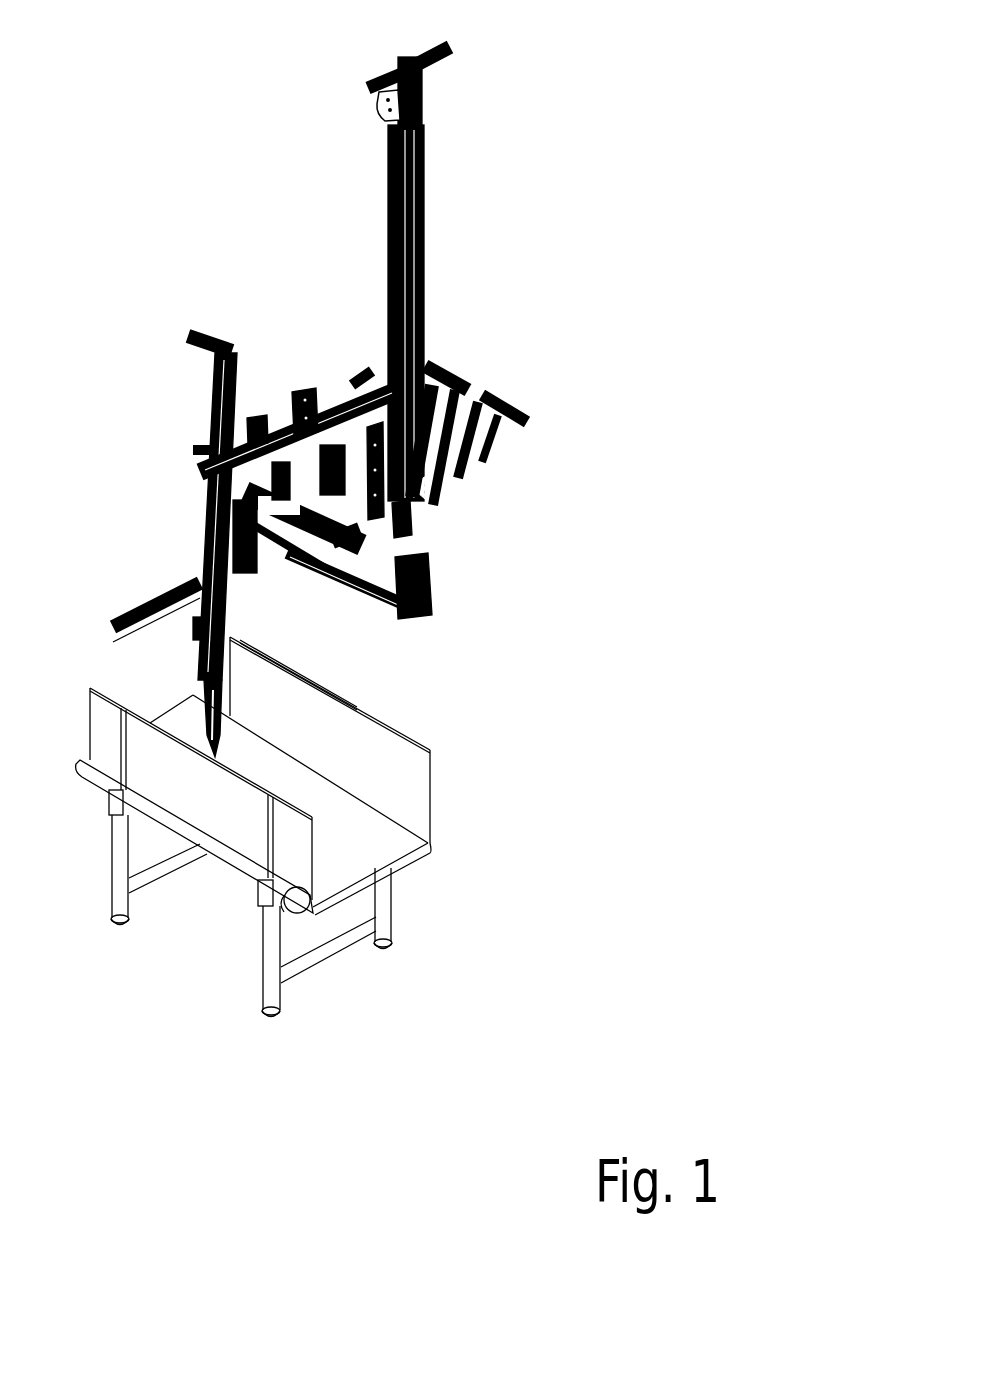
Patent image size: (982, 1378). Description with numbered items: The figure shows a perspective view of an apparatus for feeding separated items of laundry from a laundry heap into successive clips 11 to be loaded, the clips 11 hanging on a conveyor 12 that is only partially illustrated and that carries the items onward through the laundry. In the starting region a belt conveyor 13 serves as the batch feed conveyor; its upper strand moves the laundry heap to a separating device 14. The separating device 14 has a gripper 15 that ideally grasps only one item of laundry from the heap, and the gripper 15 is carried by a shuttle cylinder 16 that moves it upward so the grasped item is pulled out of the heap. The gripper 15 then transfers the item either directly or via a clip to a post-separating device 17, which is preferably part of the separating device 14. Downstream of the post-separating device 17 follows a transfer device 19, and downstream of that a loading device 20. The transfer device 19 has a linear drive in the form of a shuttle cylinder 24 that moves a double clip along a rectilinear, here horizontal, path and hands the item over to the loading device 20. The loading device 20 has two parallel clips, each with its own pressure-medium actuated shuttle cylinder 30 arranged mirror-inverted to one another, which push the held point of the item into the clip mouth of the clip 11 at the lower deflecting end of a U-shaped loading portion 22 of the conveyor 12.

The clip 11 is at (412, 528).
The conveyor 12 is at (465, 274).
The belt conveyor 13 is at (345, 827).
The separating device 14 is at (270, 320).
The gripper 15 is at (220, 748).
The shuttle cylinder 16 is at (207, 527).
The post-separating device 17 is at (340, 420).
The transfer device 19 is at (466, 597).
The loading device 20 is at (496, 400).
The U-shaped loading portion 22 is at (418, 247).
The shuttle cylinder 24 is at (368, 592).
The shuttle cylinder 30 is at (448, 362).